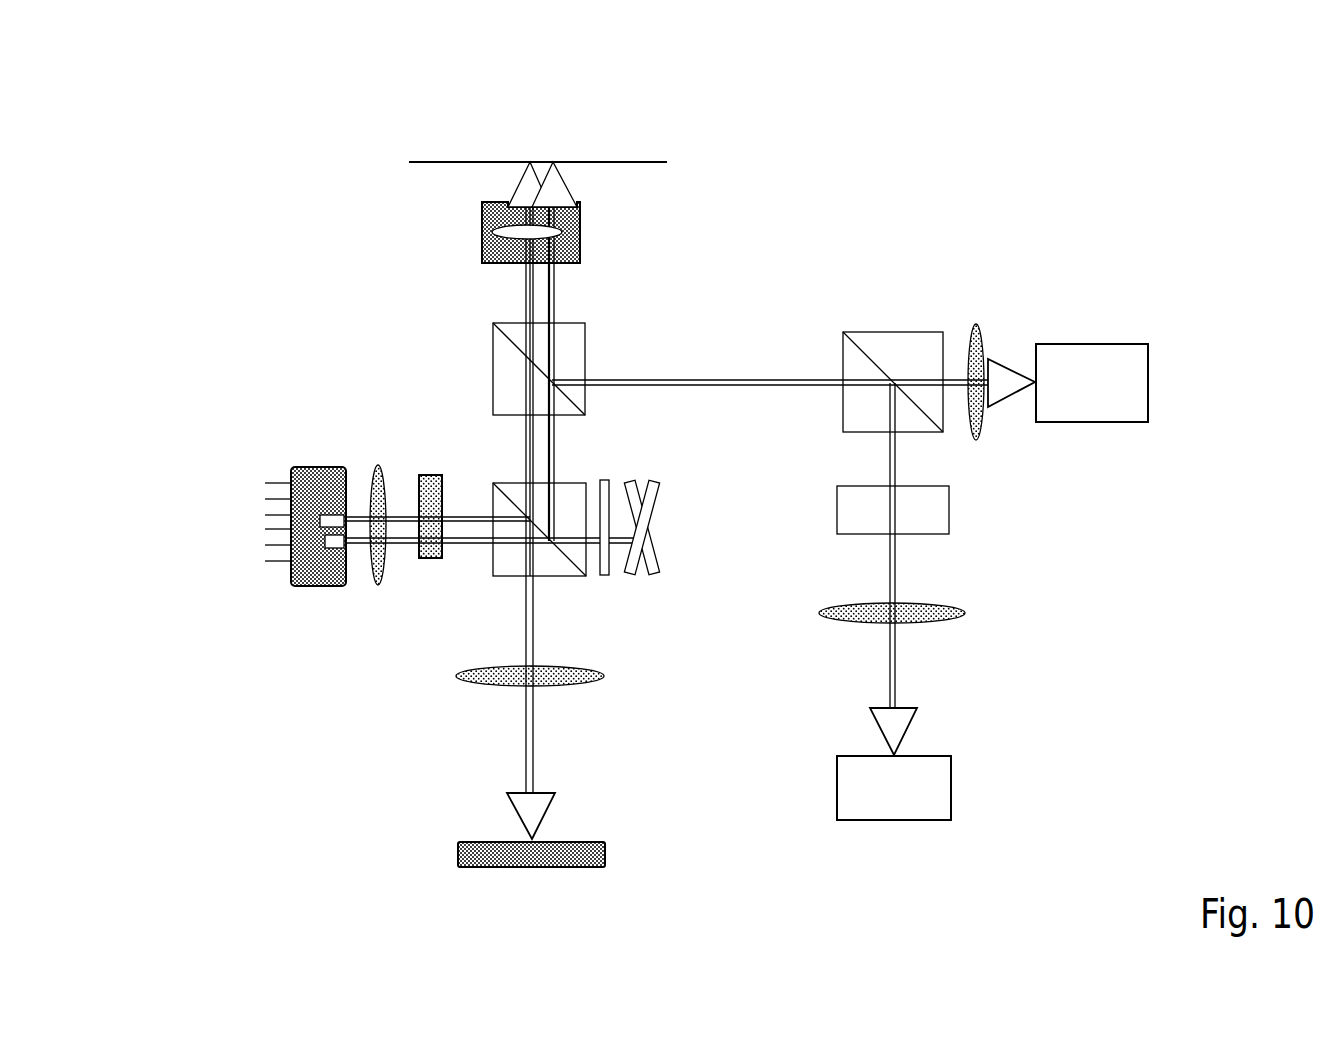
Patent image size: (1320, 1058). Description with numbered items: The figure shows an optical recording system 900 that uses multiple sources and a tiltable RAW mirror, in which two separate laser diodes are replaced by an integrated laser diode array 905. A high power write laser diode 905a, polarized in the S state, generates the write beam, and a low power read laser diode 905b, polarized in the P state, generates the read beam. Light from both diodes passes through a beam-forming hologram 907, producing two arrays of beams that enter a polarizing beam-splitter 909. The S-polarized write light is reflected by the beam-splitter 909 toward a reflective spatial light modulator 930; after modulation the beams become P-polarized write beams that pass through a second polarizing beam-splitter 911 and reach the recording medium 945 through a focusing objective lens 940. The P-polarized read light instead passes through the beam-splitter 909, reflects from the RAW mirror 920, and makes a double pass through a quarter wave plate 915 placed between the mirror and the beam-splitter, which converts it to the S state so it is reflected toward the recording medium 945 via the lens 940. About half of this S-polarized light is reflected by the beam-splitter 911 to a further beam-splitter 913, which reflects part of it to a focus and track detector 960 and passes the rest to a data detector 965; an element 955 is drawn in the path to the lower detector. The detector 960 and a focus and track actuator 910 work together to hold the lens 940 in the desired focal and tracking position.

The optical recording system 900 is at (1026, 67).
The integrated laser diode array 905 is at (290, 478).
The write laser diode 905a is at (323, 518).
The read laser diode 905b is at (333, 542).
The beam-forming hologram 907 is at (433, 559).
The polarizing beam-splitter 909 is at (497, 483).
The focus and track actuator 910 is at (482, 232).
The polarizing beam-splitter 911 is at (493, 363).
The beam-splitter 913 is at (868, 332).
The quarter wave plate 915 is at (605, 480).
The RAW mirror 920 is at (642, 573).
The reflective spatial light modulator 930 is at (587, 867).
The focusing objective lens 940 is at (550, 232).
The recording medium 945 is at (449, 161).
The optical element 955 is at (949, 511).
The focus and track detector 960 is at (936, 812).
The data detector 965 is at (1136, 413).